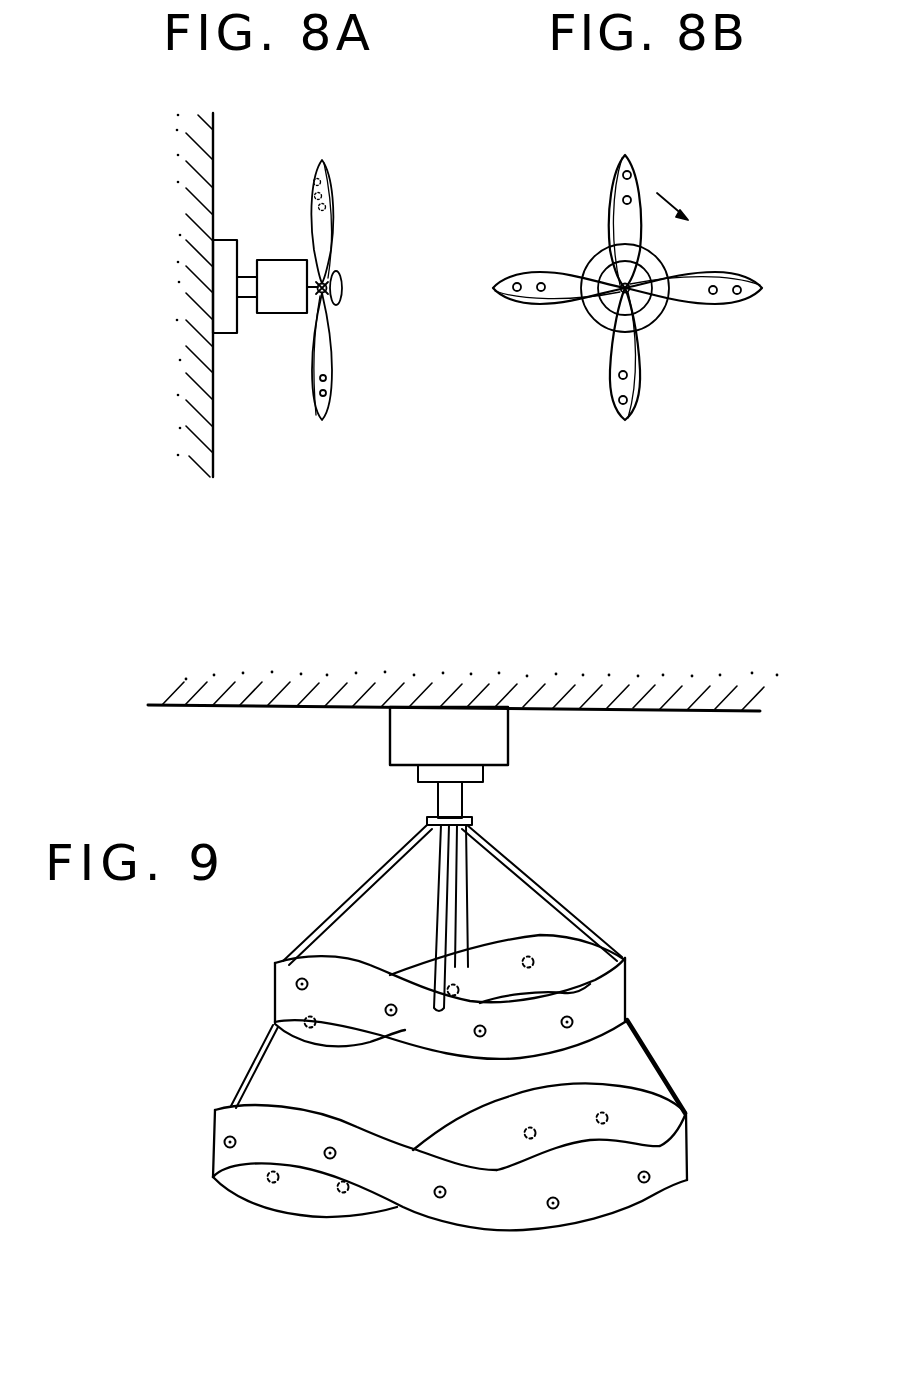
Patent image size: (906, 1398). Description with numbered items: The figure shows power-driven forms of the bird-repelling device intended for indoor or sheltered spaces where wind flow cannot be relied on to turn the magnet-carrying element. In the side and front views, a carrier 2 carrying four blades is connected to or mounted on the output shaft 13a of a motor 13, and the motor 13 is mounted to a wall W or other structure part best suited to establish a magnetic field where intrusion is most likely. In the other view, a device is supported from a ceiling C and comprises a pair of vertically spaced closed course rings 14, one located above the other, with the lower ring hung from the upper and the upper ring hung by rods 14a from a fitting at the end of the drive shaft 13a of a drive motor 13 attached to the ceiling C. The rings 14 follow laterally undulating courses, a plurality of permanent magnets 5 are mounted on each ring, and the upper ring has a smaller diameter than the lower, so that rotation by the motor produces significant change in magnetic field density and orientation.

In FIG. 8A, the wall W is at (200, 213).
In FIG. 9, the ceiling C is at (478, 700).
In FIG. 8A, the carrier 2 is at (317, 160).
In FIG. 8B, the carrier 2 is at (607, 202).
In FIG. 8A, the permanent magnets 5 is at (337, 193).
In FIG. 8B, the permanent magnets 5 is at (518, 290).
In FIG. 9, the permanent magnets 5 is at (295, 983).
In FIG. 8A, the motor 13 is at (288, 300).
In FIG. 9, the motor 13 is at (410, 740).
In FIG. 8A, the output shaft 13a is at (330, 280).
In FIG. 8B, the output shaft 13a is at (640, 277).
In FIG. 9, the output shaft 13a is at (453, 800).
In FIG. 9, the closed course rings 14 is at (613, 1002).
In FIG. 9, the rods 14a is at (553, 900).